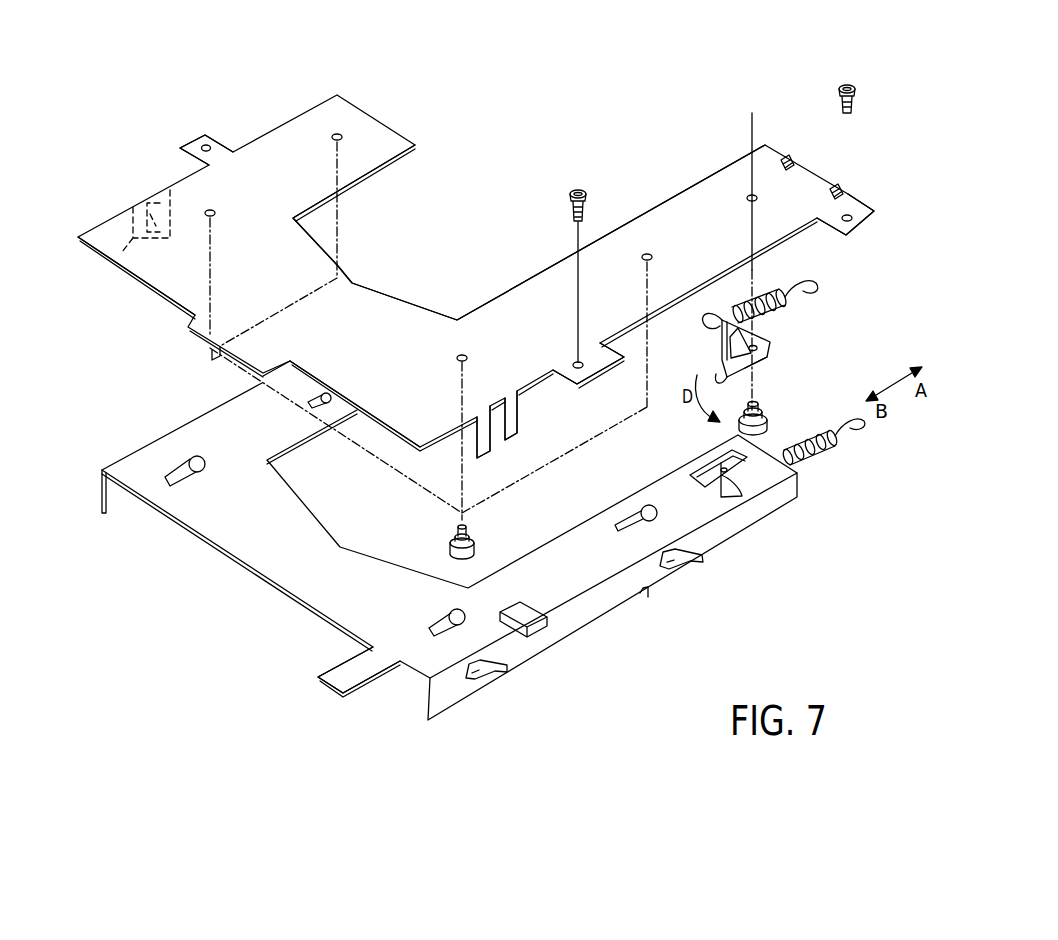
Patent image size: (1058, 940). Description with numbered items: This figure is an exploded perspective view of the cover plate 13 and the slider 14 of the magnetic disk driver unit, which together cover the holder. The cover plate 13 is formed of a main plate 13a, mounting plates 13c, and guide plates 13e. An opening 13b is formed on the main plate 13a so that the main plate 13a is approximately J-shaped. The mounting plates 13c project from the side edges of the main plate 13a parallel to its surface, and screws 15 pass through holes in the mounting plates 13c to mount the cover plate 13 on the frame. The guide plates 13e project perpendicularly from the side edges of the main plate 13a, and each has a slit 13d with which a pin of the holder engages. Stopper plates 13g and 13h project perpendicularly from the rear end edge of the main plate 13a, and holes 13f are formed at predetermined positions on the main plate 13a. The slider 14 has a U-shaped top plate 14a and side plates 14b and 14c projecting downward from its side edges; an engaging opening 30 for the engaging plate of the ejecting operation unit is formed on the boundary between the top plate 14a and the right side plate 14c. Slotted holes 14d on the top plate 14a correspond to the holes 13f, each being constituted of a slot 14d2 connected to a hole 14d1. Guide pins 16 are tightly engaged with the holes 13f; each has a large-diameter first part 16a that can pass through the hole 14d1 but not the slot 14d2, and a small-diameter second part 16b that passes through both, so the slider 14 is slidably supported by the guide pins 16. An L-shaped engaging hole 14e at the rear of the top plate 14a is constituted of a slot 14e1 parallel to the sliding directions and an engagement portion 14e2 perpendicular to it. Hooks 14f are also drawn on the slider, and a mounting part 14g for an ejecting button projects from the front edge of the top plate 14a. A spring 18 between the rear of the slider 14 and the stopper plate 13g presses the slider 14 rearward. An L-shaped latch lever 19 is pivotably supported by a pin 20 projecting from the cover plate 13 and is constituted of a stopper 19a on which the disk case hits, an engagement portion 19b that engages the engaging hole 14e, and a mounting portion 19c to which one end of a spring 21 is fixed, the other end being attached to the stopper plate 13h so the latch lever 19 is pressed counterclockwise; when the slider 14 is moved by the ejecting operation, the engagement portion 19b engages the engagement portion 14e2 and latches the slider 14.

The cover plate 13 is at (504, 287).
The main plate 13a is at (380, 310).
The opening 13b is at (380, 169).
The mounting plates 13c is at (218, 150).
The slit 13d is at (118, 258).
The guide plates 13e is at (520, 418).
The holes 13f is at (339, 134).
The stopper plate 13g is at (848, 192).
The stopper plate 13h is at (788, 162).
The slider 14 is at (490, 581).
The top plate 14a is at (212, 522).
The side plate 14b is at (102, 495).
The side plate 14c is at (567, 628).
The slotted holes 14d is at (411, 597).
The hole 14d1 is at (457, 626).
The slot 14d2 is at (437, 632).
The engaging hole 14e is at (791, 521).
The slot 14e1 is at (727, 473).
The engagement portion 14e2 is at (724, 470).
The hook 14f is at (700, 560).
The mounting part 14g is at (322, 675).
The screws 15 is at (584, 193).
The guide pins 16 is at (445, 521).
The first part 16a is at (470, 550).
The second part 16b is at (453, 533).
The spring 18 is at (822, 456).
The latch lever 19 is at (758, 317).
The stopper 19a is at (722, 345).
The engagement portion 19b is at (745, 368).
The mounting portion 19c is at (708, 316).
The pin 20 is at (768, 415).
The spring 21 is at (782, 306).
The engaging opening 30 is at (545, 628).